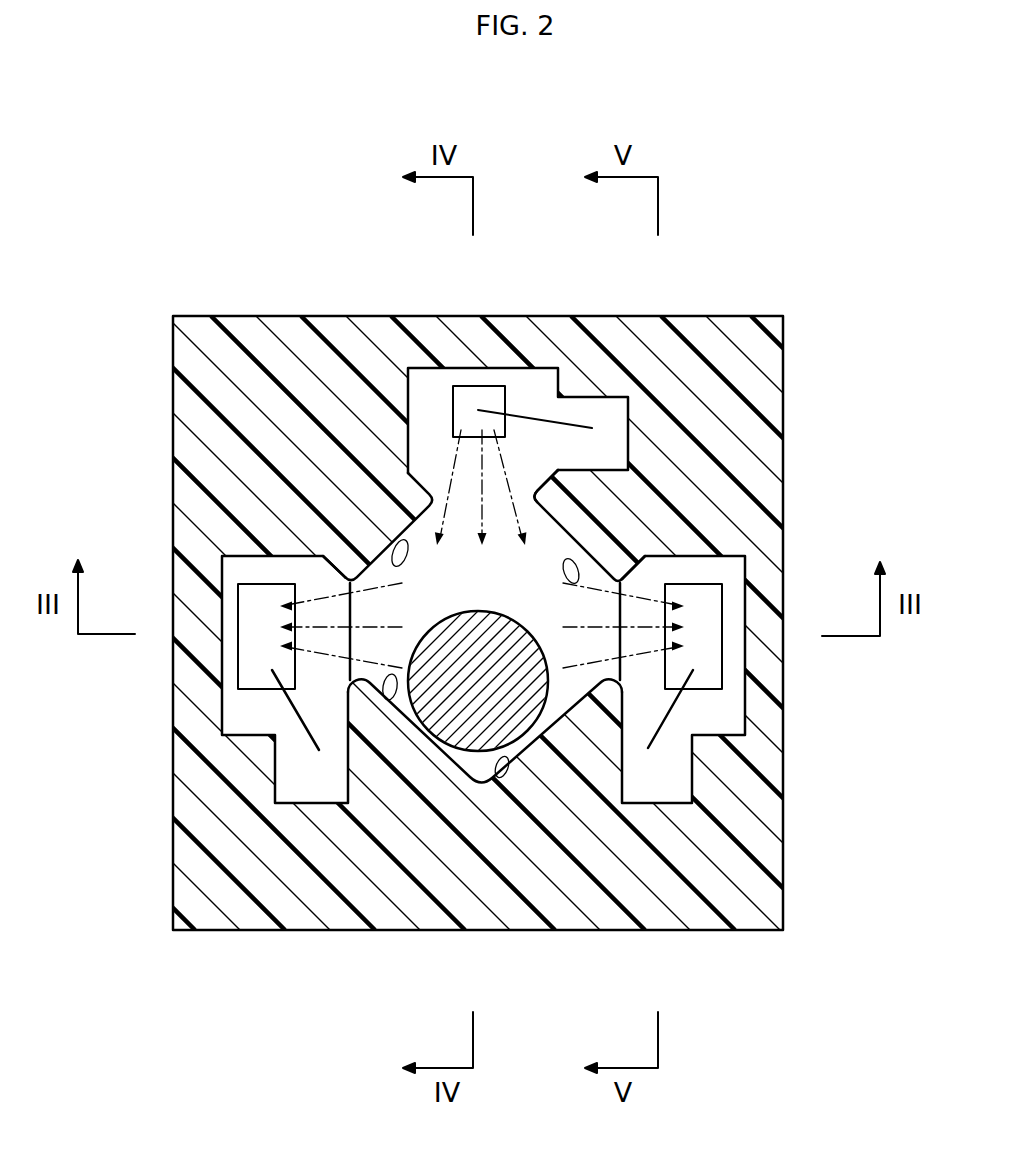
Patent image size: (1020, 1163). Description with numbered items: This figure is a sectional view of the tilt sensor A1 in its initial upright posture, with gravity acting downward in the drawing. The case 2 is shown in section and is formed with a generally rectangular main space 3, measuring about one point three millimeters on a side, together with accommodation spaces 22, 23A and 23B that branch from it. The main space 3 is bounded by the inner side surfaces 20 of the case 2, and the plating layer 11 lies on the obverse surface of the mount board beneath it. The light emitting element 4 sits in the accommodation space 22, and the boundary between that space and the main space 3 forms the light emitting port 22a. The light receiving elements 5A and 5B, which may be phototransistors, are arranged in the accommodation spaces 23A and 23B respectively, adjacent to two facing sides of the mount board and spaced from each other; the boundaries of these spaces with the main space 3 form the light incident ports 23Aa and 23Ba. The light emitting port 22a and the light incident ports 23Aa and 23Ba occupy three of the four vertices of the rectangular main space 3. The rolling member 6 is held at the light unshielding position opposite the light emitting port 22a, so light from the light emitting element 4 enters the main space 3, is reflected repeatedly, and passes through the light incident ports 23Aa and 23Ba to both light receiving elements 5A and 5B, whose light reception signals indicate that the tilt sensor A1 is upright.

The case 2 is at (762, 364).
The main space 3 is at (543, 567).
The light emitting element 4 is at (478, 398).
The light receiving element 5A is at (252, 655).
The light receiving element 5B is at (710, 650).
The rolling member 6 is at (522, 703).
The plating layer 11 is at (623, 760).
The inner side surfaces 20 is at (395, 552).
The accommodation space 22 is at (543, 397).
The light emitting port 22a is at (447, 488).
The accommodation space 23A is at (258, 710).
The light incident port 23Aa is at (347, 600).
The accommodation space 23B is at (712, 726).
The light incident port 23Ba is at (722, 690).
The tilt sensor A1 is at (766, 306).